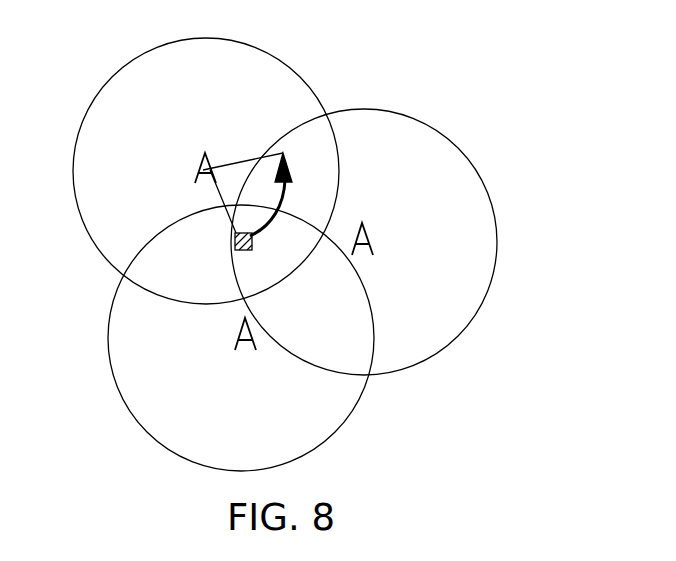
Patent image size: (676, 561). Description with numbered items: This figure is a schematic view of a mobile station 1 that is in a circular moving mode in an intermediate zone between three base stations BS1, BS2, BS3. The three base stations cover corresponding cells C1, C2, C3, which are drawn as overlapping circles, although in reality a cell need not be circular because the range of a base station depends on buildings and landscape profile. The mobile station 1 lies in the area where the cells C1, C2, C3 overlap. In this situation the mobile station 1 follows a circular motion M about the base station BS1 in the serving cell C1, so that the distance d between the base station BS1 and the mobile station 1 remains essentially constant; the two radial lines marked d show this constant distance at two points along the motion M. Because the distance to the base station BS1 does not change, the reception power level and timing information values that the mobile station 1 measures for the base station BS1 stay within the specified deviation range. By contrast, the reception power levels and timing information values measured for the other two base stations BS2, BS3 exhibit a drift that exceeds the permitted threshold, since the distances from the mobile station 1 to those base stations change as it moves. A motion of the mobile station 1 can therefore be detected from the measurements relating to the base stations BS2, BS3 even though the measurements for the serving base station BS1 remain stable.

The cell C1 is at (272, 73).
The cell C2 is at (477, 210).
The cell C3 is at (147, 400).
The base station BS1 is at (212, 158).
The base station BS2 is at (368, 238).
The base station BS3 is at (252, 351).
The distance between base station and mobile terminal d is at (242, 186).
The mobile station 1 is at (252, 244).
The circular motion M is at (280, 198).